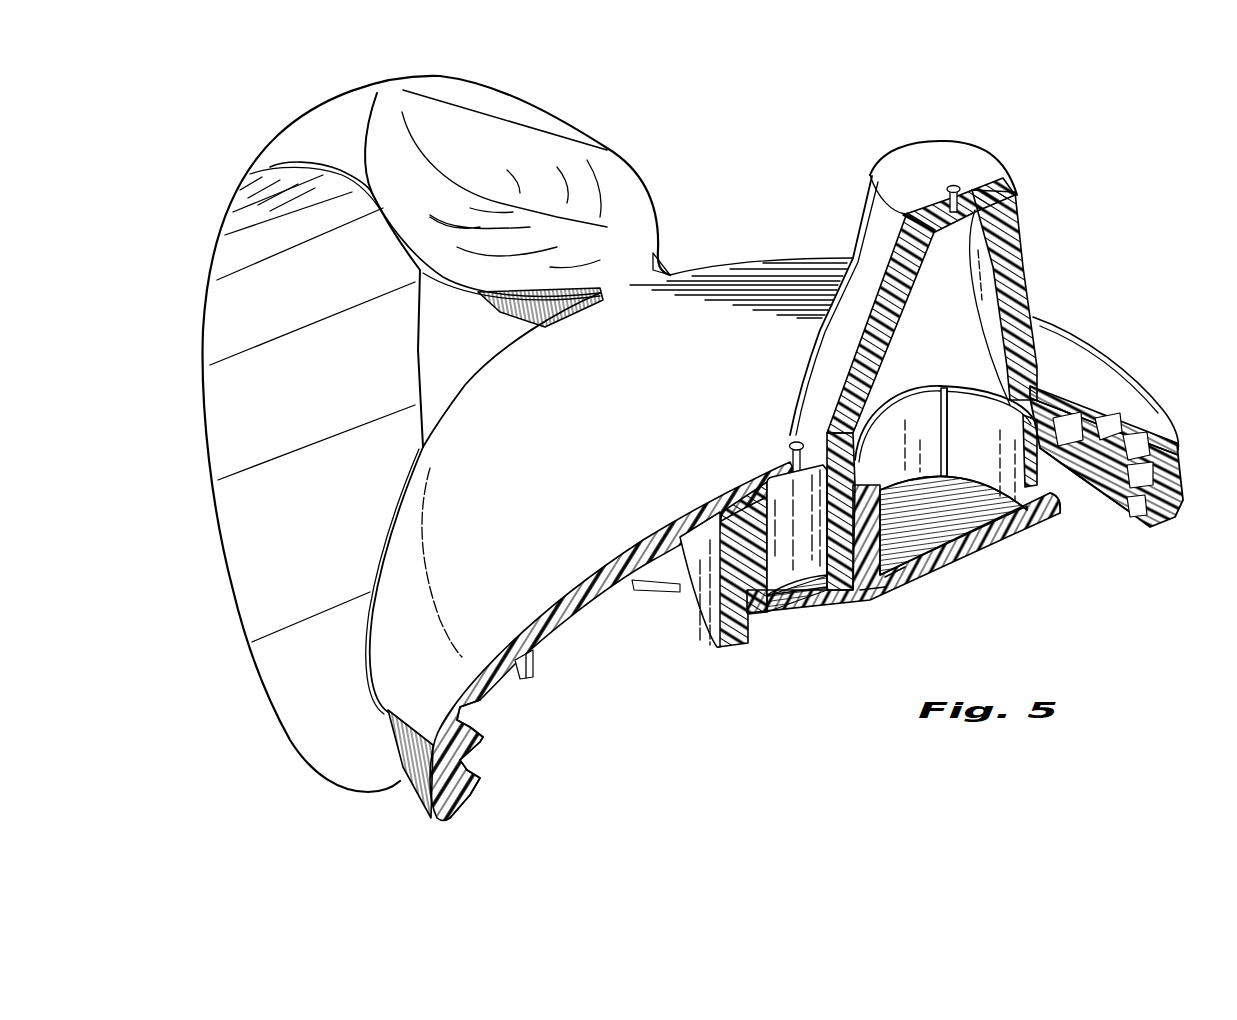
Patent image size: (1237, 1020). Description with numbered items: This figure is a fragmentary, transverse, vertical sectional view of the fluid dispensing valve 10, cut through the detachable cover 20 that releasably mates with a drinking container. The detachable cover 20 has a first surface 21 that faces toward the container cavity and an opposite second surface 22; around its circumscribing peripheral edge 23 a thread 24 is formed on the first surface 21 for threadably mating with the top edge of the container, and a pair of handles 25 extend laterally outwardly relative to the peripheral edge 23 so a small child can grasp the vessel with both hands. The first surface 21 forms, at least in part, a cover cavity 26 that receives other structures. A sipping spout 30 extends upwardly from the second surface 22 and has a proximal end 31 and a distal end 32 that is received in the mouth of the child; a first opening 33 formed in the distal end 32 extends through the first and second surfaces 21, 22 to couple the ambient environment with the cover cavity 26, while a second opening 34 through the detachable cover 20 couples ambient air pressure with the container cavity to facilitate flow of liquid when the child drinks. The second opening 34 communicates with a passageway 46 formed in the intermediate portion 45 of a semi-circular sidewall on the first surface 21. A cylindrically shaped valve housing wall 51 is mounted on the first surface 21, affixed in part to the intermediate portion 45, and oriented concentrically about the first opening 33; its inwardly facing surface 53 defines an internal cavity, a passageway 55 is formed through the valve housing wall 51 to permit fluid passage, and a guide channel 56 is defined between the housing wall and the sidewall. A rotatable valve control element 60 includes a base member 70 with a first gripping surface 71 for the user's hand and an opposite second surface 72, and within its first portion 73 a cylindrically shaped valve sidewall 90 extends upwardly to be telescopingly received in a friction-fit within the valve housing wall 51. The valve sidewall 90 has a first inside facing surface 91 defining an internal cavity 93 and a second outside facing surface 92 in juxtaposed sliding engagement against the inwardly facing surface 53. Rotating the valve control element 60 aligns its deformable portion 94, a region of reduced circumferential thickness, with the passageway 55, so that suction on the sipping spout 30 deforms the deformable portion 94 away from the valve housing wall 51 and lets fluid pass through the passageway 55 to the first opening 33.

The fluid dispensing valve 10 is at (1183, 198).
The detachable cover 20 is at (803, 218).
The first surface 21 is at (580, 605).
The second surface 22 is at (569, 463).
The peripheral edge 23 is at (400, 750).
The thread 24 is at (475, 742).
The handles 25 is at (597, 160).
The cover cavity 26 is at (1104, 472).
The sipping spout 30 is at (1027, 255).
The proximal end 31 is at (832, 426).
The distal end 32 is at (972, 172).
The first opening 33 is at (952, 186).
The second opening 34 is at (797, 442).
The intermediate portion 45 is at (767, 622).
The passageway 46 is at (777, 548).
The valve housing wall 51 is at (896, 582).
The inwardly facing surface 53 is at (877, 590).
The passageway 55 is at (1046, 455).
The guide channel 56 is at (807, 597).
The valve control element 60 is at (1041, 535).
The base member 70 is at (911, 566).
The first gripping surface 71 is at (917, 572).
The second surface 72 is at (985, 525).
The first portion 73 is at (940, 523).
The valve sidewall 90 is at (907, 445).
The first inside facing surface 91 is at (914, 413).
The second outside facing surface 92 is at (1096, 484).
The internal cavity 93 is at (960, 415).
The deformable portion 94 is at (992, 438).